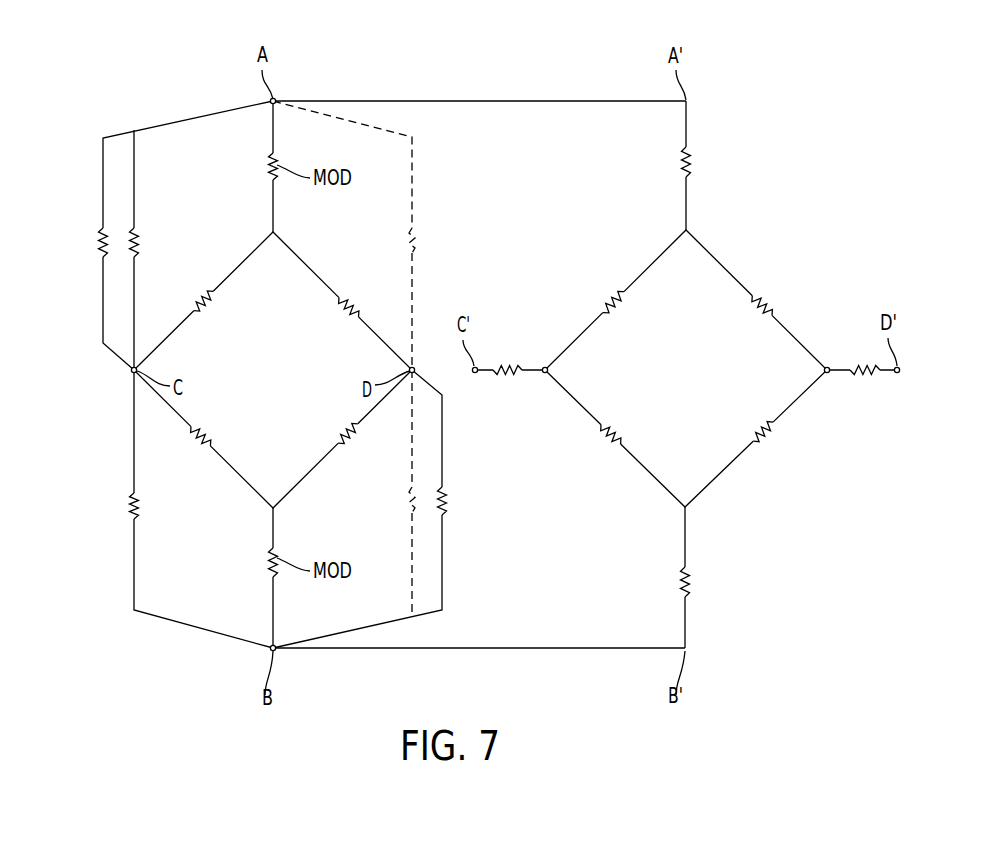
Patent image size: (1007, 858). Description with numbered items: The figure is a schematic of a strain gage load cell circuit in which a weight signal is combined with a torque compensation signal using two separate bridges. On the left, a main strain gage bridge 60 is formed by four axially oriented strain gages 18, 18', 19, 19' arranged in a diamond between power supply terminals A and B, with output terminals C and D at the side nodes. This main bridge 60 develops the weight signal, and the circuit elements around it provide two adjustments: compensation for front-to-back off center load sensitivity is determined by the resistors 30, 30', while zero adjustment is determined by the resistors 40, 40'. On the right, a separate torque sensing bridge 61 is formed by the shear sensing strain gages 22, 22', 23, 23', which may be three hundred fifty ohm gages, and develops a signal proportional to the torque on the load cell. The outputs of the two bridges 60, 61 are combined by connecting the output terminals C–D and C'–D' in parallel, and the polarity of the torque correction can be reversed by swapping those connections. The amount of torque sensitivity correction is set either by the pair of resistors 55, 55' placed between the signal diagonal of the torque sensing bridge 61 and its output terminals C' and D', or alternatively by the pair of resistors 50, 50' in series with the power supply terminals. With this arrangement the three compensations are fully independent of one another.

The zero adjustment resistor 40 is at (76, 236).
The front-to-back compensation resistor 30 is at (161, 234).
The main strain gage bridge 60 is at (244, 273).
The axially oriented strain gage 18 is at (186, 277).
The axially oriented strain gage 18' is at (362, 280).
The axially oriented strain gage 19 is at (215, 412).
The axially oriented strain gage 19' is at (333, 411).
The front-to-back compensation resistor 30' is at (163, 515).
The zero adjustment resistor 40' is at (469, 507).
The power supply series resistor 50 is at (714, 165).
The power supply series resistor 50' is at (714, 587).
The torque sensing bridge 61 is at (737, 243).
The shear sensing strain gage 22 is at (583, 289).
The shear sensing strain gage 22' is at (796, 290).
The shear sensing strain gage 23 is at (796, 443).
The shear sensing strain gage 23' is at (575, 445).
The output resistor 55 is at (502, 344).
The output resistor 55' is at (862, 343).